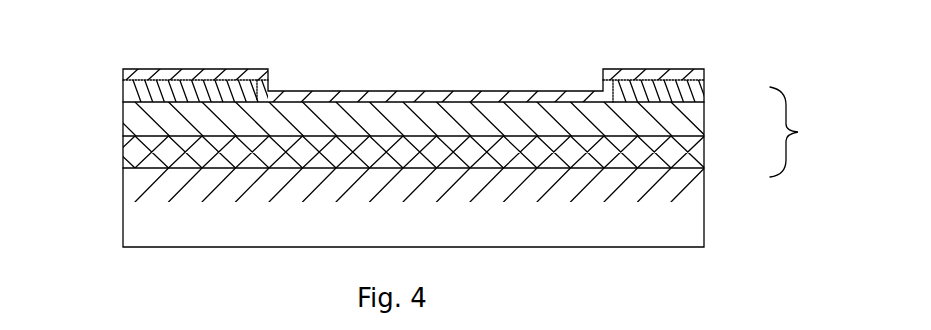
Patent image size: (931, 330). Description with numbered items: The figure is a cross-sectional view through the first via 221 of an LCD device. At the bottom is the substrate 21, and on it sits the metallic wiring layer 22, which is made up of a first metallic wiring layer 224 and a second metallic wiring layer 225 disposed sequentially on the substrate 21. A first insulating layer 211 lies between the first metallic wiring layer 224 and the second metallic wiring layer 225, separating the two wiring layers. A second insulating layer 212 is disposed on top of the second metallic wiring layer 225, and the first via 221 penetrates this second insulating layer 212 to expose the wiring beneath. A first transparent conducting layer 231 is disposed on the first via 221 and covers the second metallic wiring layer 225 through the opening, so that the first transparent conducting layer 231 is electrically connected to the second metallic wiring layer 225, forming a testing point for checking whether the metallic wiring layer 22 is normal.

The substrate 21 is at (694, 237).
The first insulating layer 211 is at (128, 150).
The second insulating layer 212 is at (128, 95).
The metallic wiring layer 22 is at (800, 132).
The first via 221 is at (460, 86).
The first metallic wiring layer 224 is at (694, 193).
The second metallic wiring layer 225 is at (694, 125).
The first transparent conducting layer 231 is at (682, 66).